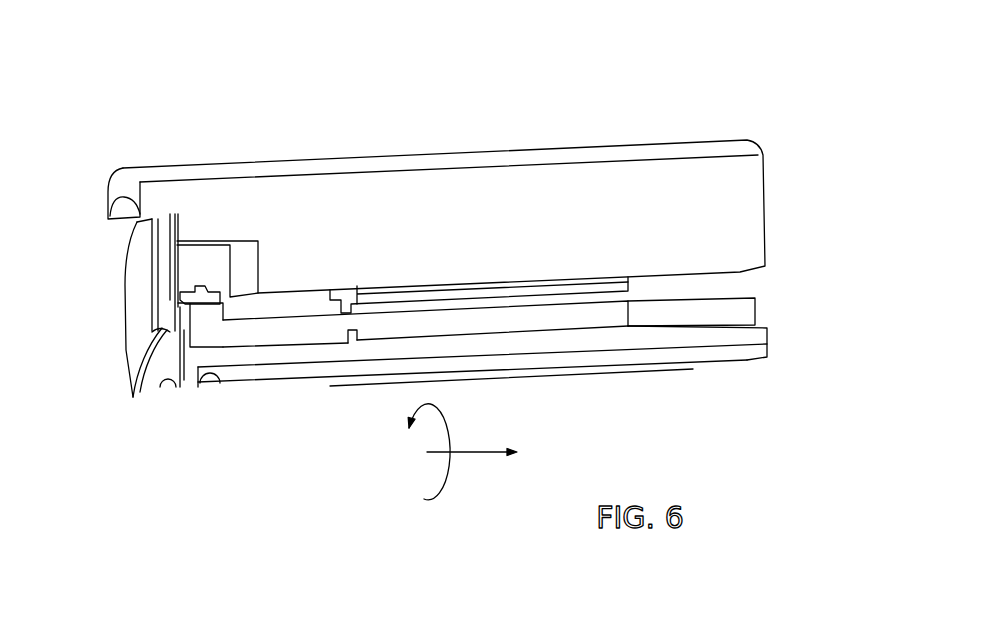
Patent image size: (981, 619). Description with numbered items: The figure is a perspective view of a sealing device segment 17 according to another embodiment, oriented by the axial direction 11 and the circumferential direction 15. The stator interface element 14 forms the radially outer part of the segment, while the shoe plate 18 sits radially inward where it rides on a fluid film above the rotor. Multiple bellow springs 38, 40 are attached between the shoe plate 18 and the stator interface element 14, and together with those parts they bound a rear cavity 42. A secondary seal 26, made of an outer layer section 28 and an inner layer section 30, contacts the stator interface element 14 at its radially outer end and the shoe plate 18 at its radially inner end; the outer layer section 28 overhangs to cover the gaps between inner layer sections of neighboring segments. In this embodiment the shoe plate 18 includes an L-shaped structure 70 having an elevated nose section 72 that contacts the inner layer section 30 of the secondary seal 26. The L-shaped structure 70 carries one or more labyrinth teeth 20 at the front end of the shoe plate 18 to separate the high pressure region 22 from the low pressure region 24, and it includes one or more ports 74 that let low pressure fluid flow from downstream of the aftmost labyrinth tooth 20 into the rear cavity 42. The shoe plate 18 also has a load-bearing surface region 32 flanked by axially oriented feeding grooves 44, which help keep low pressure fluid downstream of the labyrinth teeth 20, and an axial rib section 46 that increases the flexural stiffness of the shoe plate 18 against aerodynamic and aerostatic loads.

The sealing device segment 17 is at (691, 72).
The stator interface element 14 is at (185, 170).
The high pressure region 22 is at (76, 208).
The outer layer section 28 is at (133, 260).
The secondary seal 26 is at (118, 307).
The inner layer section 30 is at (163, 302).
The labyrinth teeth 20 is at (189, 332).
The elevated nose section 72 is at (200, 373).
The ports 74 is at (204, 290).
The L-shaped structure 70 is at (213, 338).
The low pressure region 24 is at (781, 282).
The bellow spring 38 is at (340, 295).
The bellow spring 40 is at (353, 322).
The rear cavity 42 is at (269, 326).
The axial rib section 46 is at (747, 313).
The shoe plate 18 is at (760, 338).
The load-bearing surface region 32 is at (730, 357).
The feeding grooves 44 is at (697, 369).
The axial direction 11 is at (490, 457).
The circumferential direction 15 is at (430, 505).